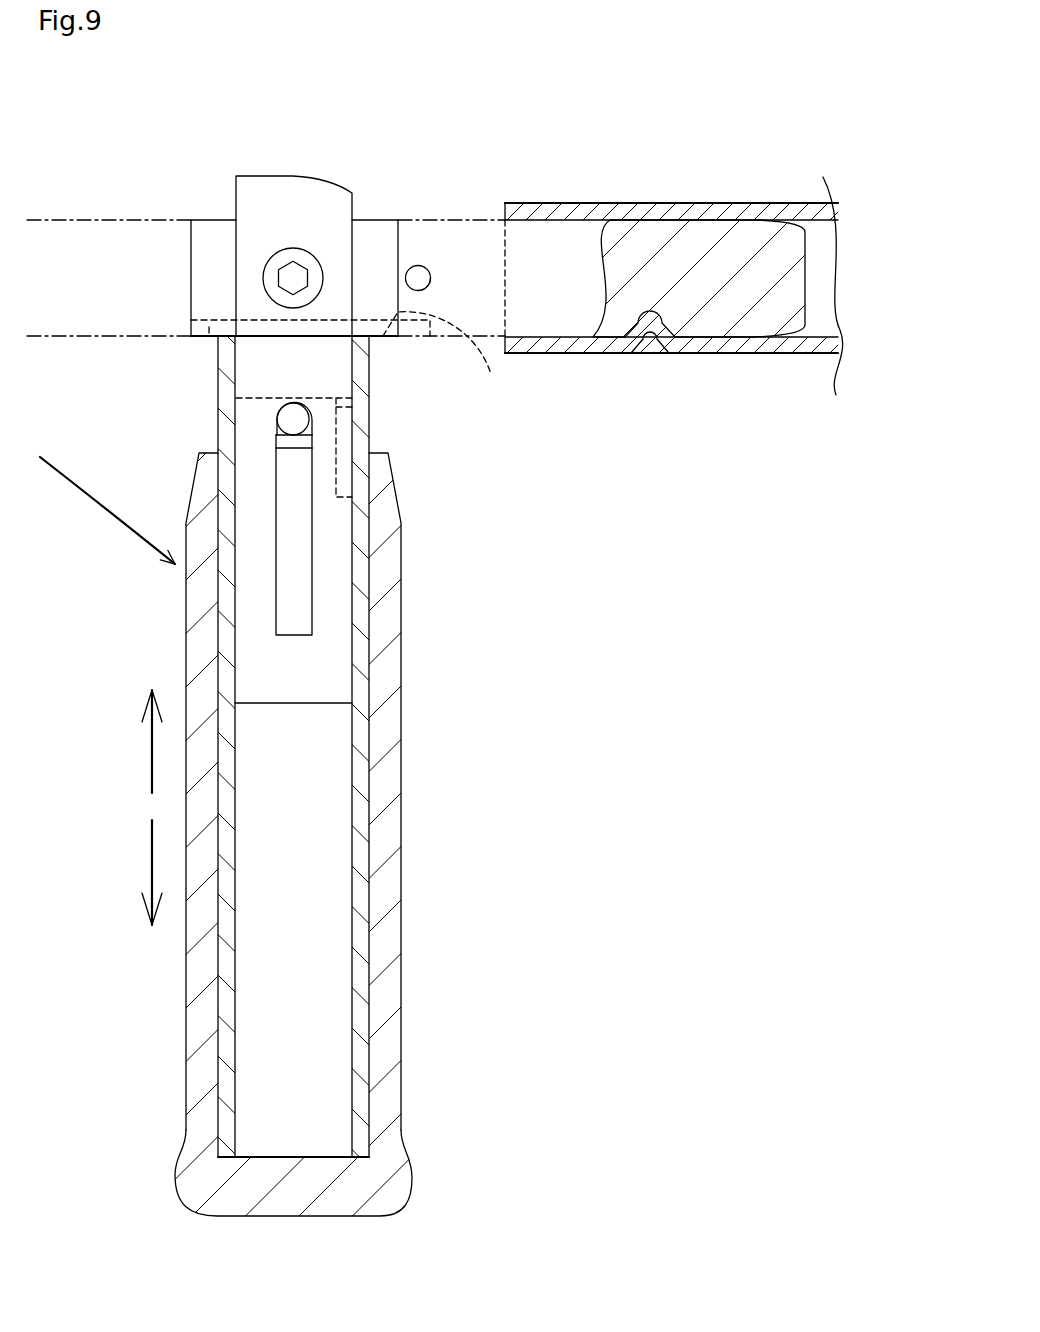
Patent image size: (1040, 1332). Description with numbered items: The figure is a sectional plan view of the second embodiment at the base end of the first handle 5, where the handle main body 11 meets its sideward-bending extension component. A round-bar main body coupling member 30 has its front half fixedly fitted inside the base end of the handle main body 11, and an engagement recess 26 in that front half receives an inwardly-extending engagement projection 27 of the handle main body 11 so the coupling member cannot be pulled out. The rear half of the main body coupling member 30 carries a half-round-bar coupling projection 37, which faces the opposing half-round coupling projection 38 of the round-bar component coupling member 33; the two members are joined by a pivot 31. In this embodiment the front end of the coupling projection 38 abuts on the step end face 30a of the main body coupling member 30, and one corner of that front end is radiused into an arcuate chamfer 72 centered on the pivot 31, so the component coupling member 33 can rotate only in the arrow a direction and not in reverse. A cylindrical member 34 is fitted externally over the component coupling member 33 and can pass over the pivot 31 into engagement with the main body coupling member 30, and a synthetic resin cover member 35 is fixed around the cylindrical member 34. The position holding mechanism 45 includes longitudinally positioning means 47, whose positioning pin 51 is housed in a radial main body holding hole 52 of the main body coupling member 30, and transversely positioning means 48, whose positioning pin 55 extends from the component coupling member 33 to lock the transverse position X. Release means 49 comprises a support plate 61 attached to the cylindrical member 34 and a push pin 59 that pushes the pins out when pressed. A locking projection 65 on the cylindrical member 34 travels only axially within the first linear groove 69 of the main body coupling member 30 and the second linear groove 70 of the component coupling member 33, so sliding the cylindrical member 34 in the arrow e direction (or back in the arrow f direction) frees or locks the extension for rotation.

The first handle 5 is at (733, 147).
The handle main body 11 is at (780, 197).
The engagement recess 26 is at (651, 322).
The engagement projection 27 is at (657, 352).
The main body coupling member 30 is at (543, 217).
The step end face 30a is at (393, 338).
The pivot 31 is at (266, 267).
The component coupling member 33 is at (352, 642).
The cylindrical member 34 is at (368, 885).
The cover member 35 is at (395, 973).
The coupling projection 37 is at (217, 220).
The coupling projection 38 is at (250, 300).
The position holding mechanism 45 is at (403, 250).
The longitudinally positioning means 47 is at (420, 262).
The transversely positioning means 48 is at (275, 422).
The release means 49 is at (313, 413).
The positioning pin 51 is at (431, 277).
The main body holding hole 52 is at (427, 289).
The positioning pin 55 is at (313, 448).
The push pin 59 is at (313, 427).
The support plate 61 is at (302, 548).
The locking projection 65 is at (313, 425).
The first linear groove 69 is at (208, 328).
The second linear groove 70 is at (335, 482).
The arcuate chamfer 72 is at (345, 187).
The transverse position X is at (402, 770).
The arrow a direction a is at (121, 541).
The arrow f direction f is at (152, 754).
The arrow e direction e is at (152, 862).